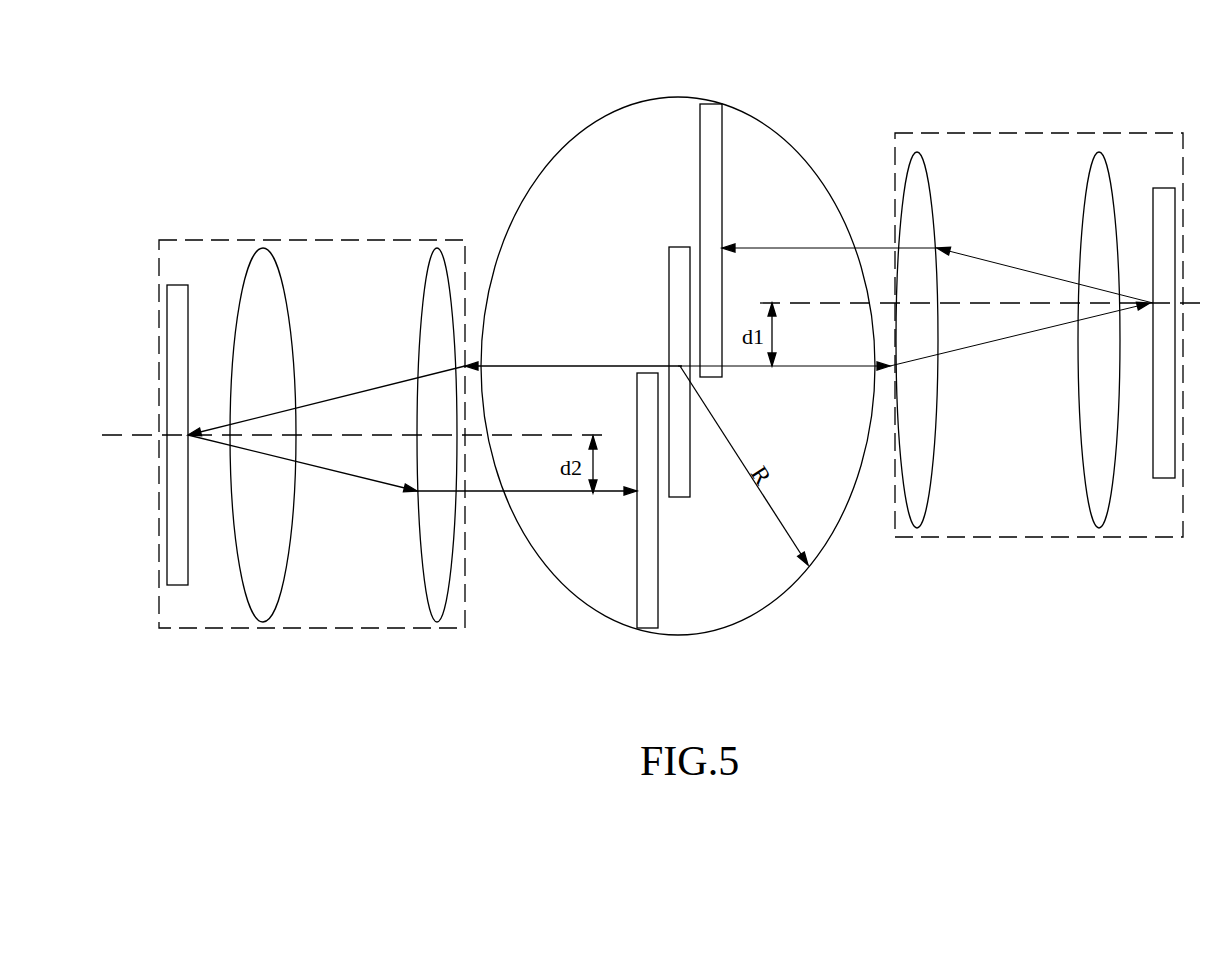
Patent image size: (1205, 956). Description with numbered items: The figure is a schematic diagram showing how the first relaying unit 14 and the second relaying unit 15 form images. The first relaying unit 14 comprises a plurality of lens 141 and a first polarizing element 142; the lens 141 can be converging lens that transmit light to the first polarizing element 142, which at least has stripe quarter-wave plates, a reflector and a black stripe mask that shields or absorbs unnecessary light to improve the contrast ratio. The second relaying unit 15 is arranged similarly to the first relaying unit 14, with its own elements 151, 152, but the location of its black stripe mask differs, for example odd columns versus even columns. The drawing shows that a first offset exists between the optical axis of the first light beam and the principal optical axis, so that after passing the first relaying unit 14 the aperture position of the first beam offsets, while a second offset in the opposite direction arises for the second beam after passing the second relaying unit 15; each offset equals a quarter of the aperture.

The second relaying unit 15 is at (278, 153).
The light source 151 is at (178, 297).
The collimating lens 152 is at (262, 262).
The first relaying unit 14 is at (1185, 66).
The lens 141 is at (1098, 166).
The first polarizing element 142 is at (1163, 200).